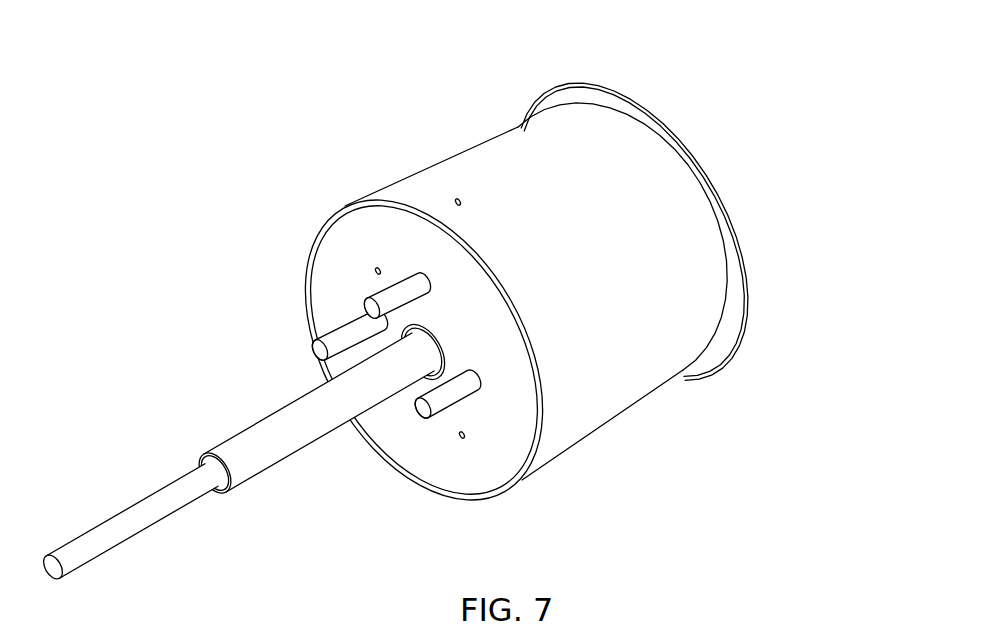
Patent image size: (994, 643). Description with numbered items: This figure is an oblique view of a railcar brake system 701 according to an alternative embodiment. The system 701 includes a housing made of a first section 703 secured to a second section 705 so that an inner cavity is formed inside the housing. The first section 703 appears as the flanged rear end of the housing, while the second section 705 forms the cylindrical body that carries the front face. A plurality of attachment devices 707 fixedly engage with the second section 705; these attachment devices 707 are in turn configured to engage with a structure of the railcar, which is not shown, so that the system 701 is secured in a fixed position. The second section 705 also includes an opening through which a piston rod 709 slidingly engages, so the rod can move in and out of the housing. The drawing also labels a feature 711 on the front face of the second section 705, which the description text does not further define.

The system 701 is at (436, 301).
The first section 703 is at (713, 373).
The second section 705 is at (577, 448).
The attachment devices 707 is at (418, 271).
The piston rod 709 is at (183, 505).
The front face 711 is at (313, 268).